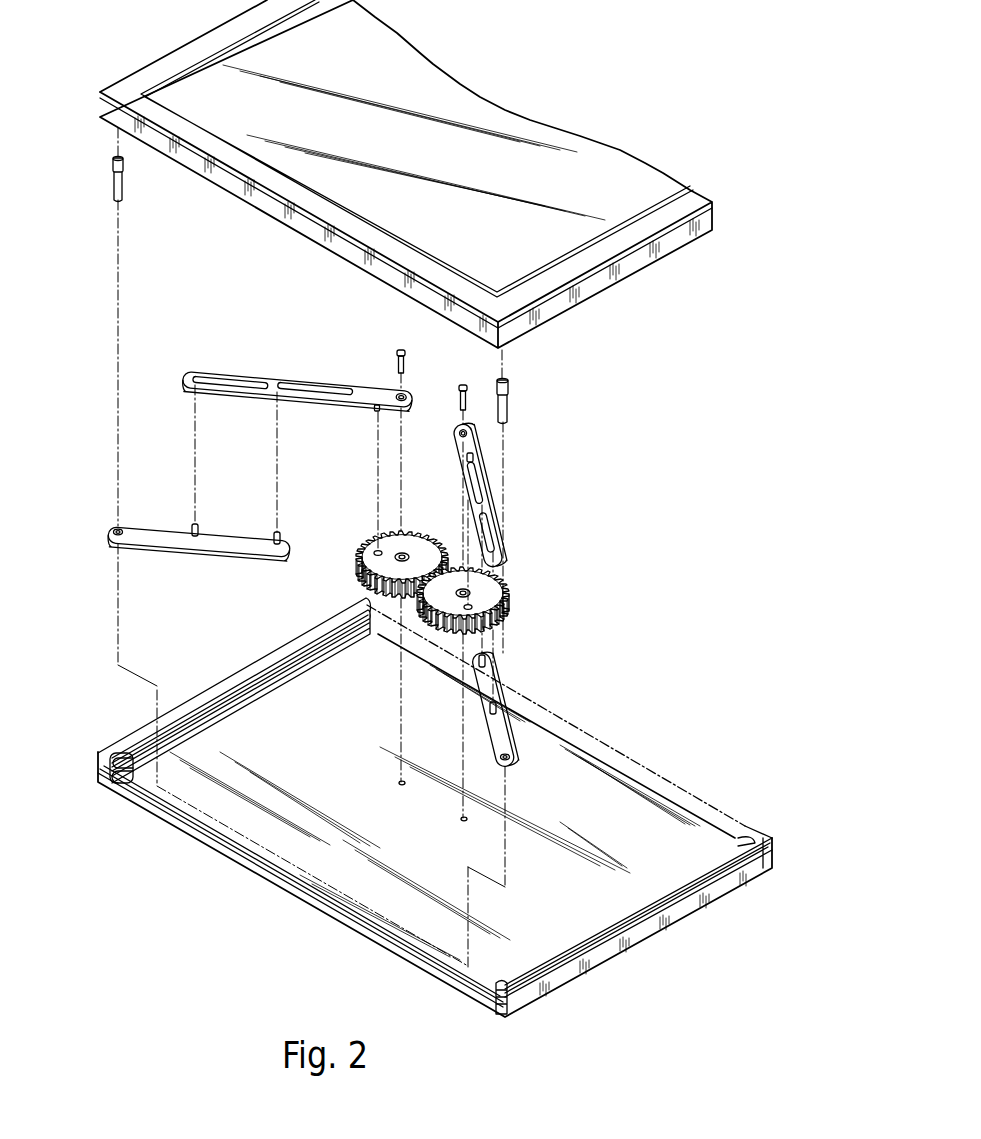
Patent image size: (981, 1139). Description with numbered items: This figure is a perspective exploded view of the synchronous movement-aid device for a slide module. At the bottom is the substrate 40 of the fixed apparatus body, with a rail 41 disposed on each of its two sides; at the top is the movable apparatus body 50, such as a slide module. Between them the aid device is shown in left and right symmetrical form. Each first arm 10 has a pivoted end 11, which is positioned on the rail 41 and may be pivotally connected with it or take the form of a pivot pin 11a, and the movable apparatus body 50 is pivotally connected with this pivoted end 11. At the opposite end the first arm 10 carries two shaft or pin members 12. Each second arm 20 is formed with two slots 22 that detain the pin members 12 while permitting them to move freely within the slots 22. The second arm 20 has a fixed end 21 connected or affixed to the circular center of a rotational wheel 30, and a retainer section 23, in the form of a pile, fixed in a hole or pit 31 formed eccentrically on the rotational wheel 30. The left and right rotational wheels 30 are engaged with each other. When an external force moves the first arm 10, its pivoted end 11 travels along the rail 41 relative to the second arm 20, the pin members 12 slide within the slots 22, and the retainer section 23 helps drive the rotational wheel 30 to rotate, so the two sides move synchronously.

The first arm 10 is at (168, 552).
The pivoted end 11 is at (117, 528).
The pivot pin 11a is at (125, 186).
The shaft or pin member 12 is at (194, 526).
The second arm 20 is at (273, 378).
The fixed end 21 is at (402, 392).
The slot 22 is at (210, 376).
The retainer section 23 is at (374, 409).
The rotational wheel 30 is at (358, 582).
The hole or pit 31 is at (376, 550).
The substrate 40 is at (372, 935).
The rail 41 is at (235, 694).
The movable apparatus body 50 is at (608, 162).